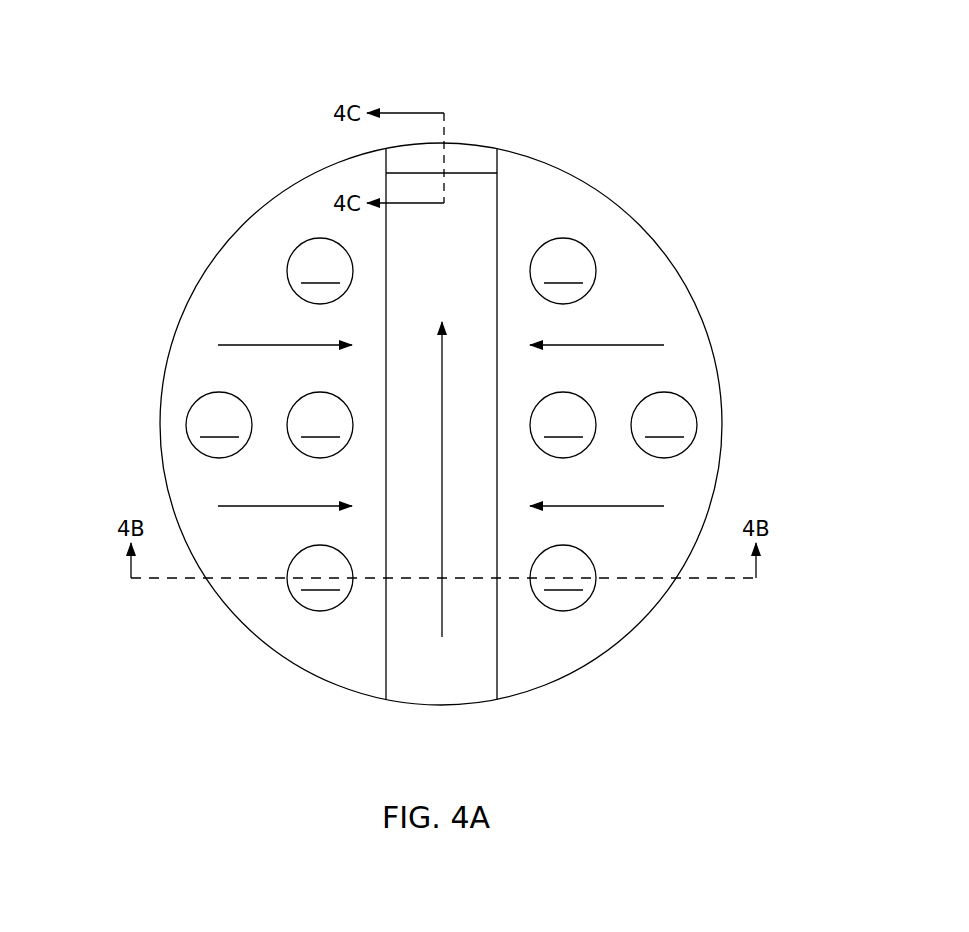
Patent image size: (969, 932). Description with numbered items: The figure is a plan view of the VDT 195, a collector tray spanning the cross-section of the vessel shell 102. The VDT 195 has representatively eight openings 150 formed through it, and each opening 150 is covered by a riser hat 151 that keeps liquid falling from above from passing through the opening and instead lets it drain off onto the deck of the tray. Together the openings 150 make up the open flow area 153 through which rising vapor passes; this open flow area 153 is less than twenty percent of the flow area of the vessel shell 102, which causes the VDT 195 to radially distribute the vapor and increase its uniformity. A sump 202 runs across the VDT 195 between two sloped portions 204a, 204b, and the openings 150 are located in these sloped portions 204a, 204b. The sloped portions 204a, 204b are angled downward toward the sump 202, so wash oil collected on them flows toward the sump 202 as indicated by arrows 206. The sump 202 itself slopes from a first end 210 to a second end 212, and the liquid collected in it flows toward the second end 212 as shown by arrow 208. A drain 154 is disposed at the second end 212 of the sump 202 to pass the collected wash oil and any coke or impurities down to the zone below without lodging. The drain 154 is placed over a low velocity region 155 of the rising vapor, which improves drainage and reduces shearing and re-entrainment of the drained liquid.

The VDT 195 is at (234, 54).
The vessel shell 102 is at (722, 430).
The low velocity region 155 is at (524, 142).
The sump 202 is at (482, 696).
The first end 210 is at (400, 704).
The second end 212 is at (460, 143).
The drain 154 is at (488, 158).
The arrow 208 is at (447, 402).
The sloped portion 204a is at (673, 260).
The sloped portion 204b is at (210, 262).
The arrows 206 is at (272, 348).
The open flow area 153 is at (441, 424).
The riser hat 151 is at (293, 243).
The openings 150 is at (288, 292).